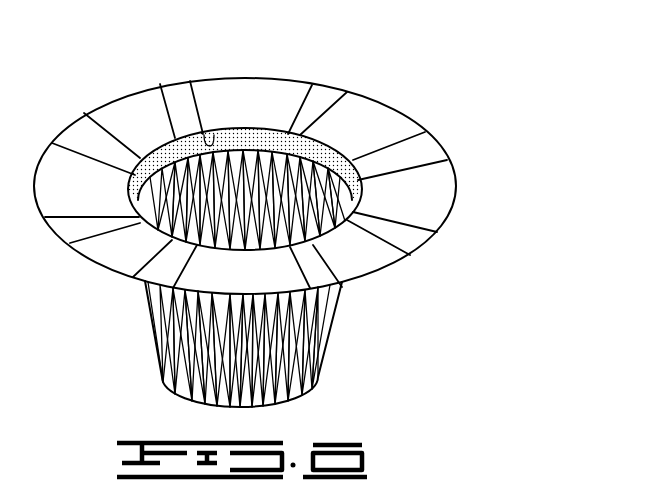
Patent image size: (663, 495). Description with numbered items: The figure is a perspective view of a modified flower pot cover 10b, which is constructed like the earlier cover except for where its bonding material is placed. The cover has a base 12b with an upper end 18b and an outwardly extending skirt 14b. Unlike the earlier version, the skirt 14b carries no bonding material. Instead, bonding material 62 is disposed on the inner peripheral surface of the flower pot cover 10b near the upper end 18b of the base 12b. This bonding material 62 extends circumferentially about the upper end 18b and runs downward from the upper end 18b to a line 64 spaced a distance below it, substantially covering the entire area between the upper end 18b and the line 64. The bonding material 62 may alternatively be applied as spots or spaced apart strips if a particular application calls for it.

The flower pot cover 10b is at (424, 276).
The base 12b is at (305, 368).
The skirt 14b is at (438, 175).
The upper end 18b is at (372, 103).
The bonding material 62 is at (252, 137).
The line 64 is at (208, 136).